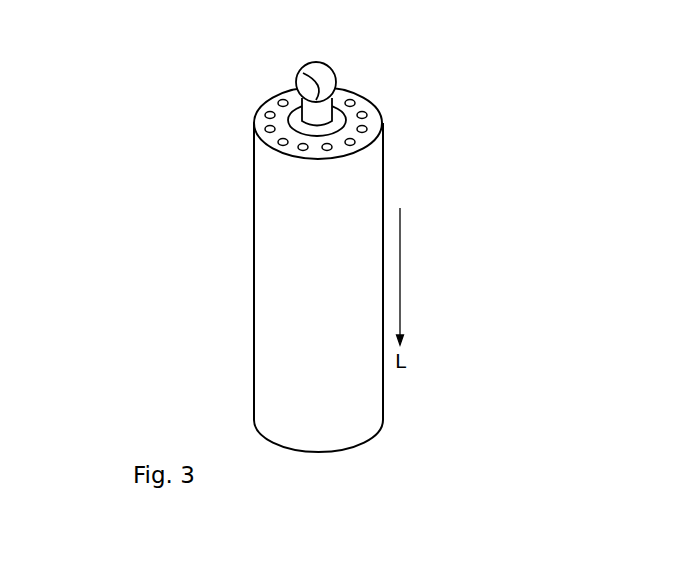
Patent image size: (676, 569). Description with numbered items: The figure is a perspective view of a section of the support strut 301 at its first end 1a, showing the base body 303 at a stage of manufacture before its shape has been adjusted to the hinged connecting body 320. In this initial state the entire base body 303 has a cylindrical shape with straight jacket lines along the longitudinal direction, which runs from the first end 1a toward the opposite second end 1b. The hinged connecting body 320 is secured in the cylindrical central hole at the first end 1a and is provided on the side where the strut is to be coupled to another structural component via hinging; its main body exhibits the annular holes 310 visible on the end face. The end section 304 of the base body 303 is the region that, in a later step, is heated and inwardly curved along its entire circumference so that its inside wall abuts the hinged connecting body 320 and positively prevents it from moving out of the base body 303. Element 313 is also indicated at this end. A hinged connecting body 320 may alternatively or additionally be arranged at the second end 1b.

The first end 1a is at (358, 82).
The second end 1b is at (322, 467).
The support strut 301 is at (303, 254).
The base body 303 is at (352, 180).
The end section 304 is at (358, 82).
The annular holes 310 is at (352, 101).
The central opening 313 is at (262, 125).
The hinged connecting body 320 is at (321, 52).